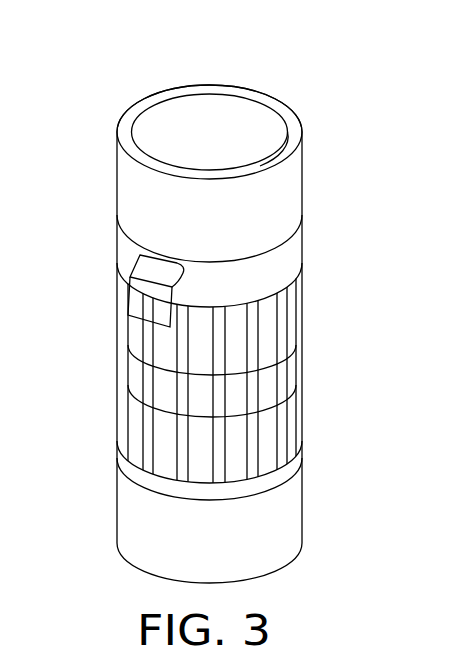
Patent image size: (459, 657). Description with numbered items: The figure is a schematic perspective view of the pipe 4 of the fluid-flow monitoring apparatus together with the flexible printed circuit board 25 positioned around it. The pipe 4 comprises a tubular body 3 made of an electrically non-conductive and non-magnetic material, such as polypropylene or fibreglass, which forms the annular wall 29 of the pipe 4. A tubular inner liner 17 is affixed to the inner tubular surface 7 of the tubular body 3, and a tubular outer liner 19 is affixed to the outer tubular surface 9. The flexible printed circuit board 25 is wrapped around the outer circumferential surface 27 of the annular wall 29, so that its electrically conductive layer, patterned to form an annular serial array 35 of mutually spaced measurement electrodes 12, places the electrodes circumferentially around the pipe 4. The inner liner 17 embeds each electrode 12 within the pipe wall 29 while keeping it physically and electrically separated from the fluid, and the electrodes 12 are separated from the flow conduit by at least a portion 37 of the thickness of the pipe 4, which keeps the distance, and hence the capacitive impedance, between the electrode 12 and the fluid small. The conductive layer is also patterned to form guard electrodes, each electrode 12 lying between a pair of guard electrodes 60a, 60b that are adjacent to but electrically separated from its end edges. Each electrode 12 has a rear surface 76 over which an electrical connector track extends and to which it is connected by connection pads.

The tubular body 3 is at (284, 106).
The pipe 4 is at (292, 205).
The inner tubular surface 7 is at (179, 130).
The outer tubular surface 9 is at (282, 171).
The measurement electrode 12 is at (238, 401).
The tubular inner liner 17 is at (285, 128).
The tubular outer liner 19 is at (304, 152).
The flexible printed circuit board 25 is at (274, 266).
The outer circumferential surface 27 is at (117, 195).
The annular wall 29 is at (117, 128).
The annular serial array 35 is at (133, 372).
The portion of pipe thickness 37 is at (191, 88).
The guard electrode 60a is at (238, 343).
The guard electrode 60b is at (238, 455).
The rear surface 76 is at (130, 302).